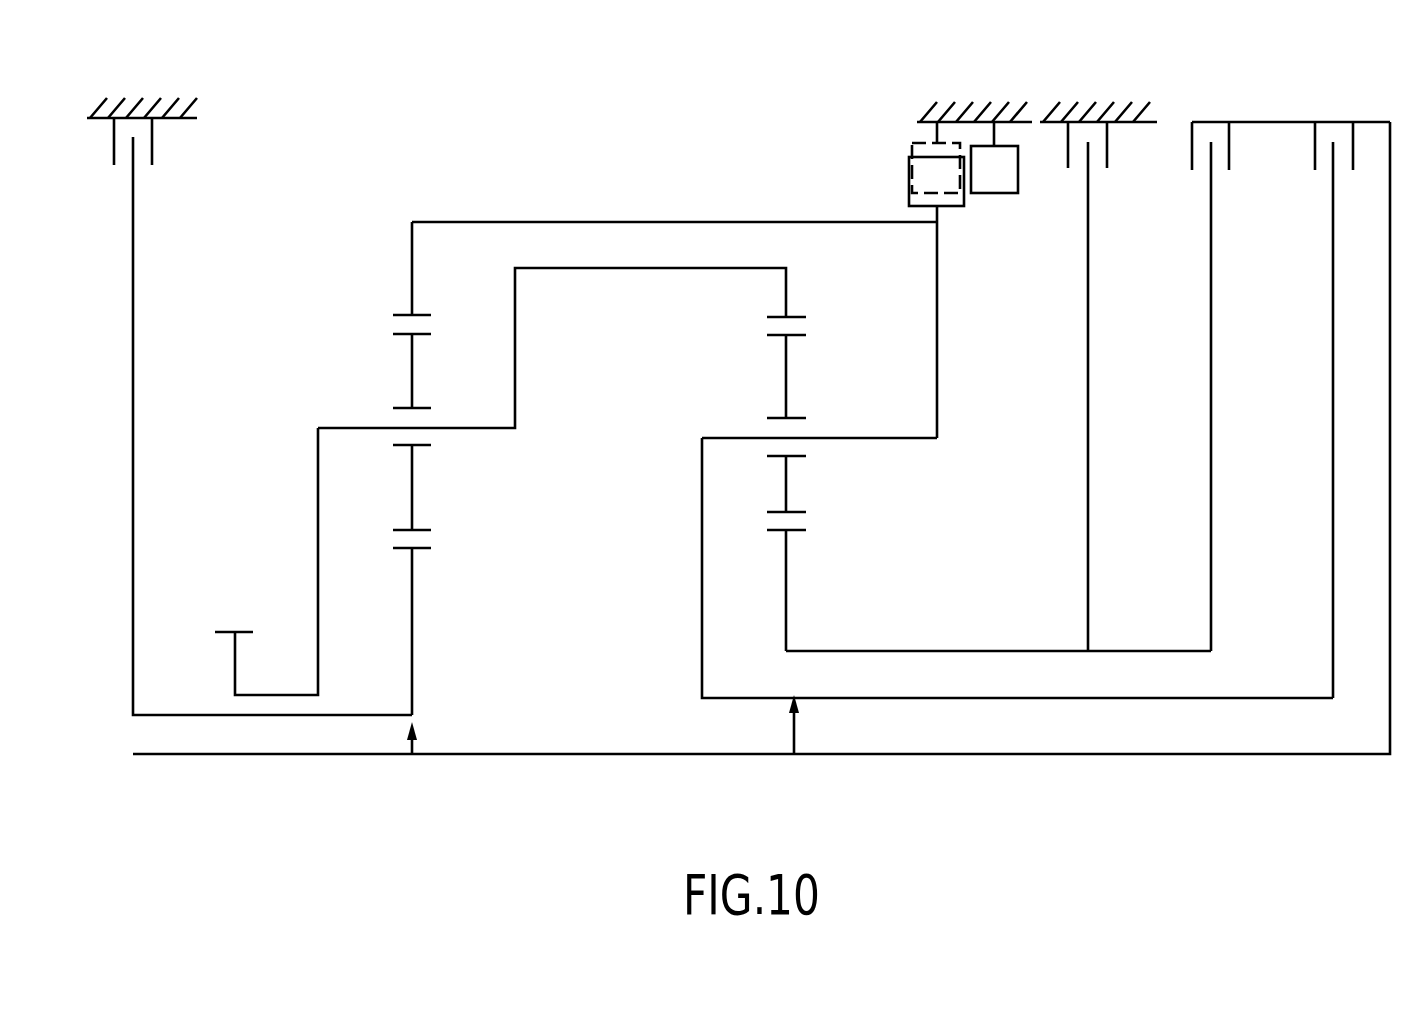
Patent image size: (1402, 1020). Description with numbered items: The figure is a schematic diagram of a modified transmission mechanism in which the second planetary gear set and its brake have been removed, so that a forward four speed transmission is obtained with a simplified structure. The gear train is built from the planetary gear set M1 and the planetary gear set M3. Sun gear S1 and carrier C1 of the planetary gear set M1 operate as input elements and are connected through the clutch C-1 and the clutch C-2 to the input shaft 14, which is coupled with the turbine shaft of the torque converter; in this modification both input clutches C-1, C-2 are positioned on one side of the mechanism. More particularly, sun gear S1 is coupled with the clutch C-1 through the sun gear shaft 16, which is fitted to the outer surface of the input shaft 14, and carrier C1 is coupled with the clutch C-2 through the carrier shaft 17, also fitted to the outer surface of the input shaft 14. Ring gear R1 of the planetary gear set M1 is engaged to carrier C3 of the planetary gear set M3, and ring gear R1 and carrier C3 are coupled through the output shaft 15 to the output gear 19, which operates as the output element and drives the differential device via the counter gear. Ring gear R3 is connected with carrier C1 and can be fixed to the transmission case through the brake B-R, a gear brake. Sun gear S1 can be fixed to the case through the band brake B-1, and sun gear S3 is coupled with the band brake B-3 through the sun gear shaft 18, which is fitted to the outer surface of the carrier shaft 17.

The input shaft 14 is at (508, 754).
The output shaft 15 is at (265, 695).
The sun gear shaft 16 is at (963, 651).
The carrier shaft 17 is at (1077, 700).
The sun gear shaft 18 is at (218, 715).
The output gear 19 is at (228, 632).
The brake B-3 is at (153, 138).
The brake B-R is at (993, 193).
The brake B-1 is at (1107, 153).
The clutch C-1 is at (1229, 148).
The clutch C-2 is at (1353, 145).
The ring gear R3 is at (403, 310).
The carrier C3 is at (487, 430).
The sun gear S3 is at (428, 548).
The ring gear R1 is at (795, 315).
The carrier C1 is at (882, 435).
The sun gear S1 is at (802, 532).
The planetary gear set M3 is at (412, 755).
The planetary gear set M1 is at (794, 754).